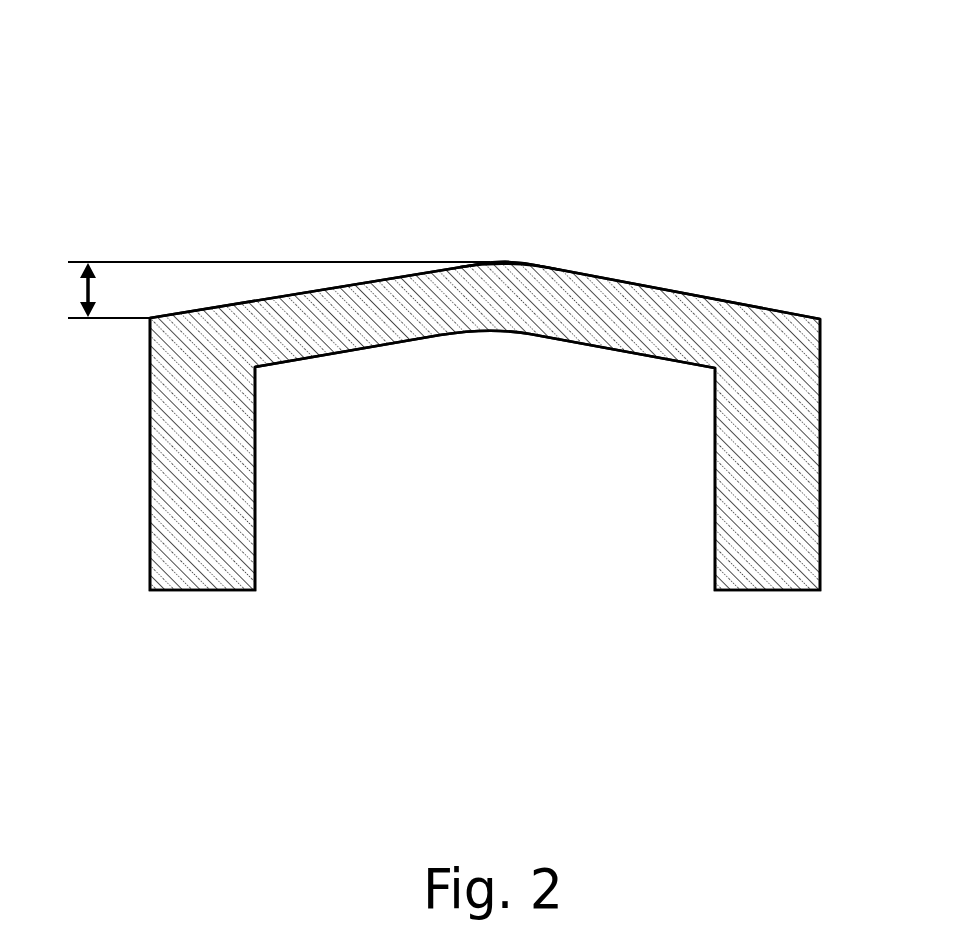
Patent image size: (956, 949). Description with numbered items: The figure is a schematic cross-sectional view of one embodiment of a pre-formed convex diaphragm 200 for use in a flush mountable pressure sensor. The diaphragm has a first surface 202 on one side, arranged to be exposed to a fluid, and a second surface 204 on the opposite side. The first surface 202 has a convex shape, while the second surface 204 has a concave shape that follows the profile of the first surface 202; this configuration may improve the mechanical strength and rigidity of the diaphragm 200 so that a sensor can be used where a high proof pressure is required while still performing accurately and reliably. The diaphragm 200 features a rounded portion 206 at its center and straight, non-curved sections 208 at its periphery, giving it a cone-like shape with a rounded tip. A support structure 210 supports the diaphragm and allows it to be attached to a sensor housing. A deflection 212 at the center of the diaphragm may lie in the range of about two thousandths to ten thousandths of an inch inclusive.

The pre-formed convex diaphragm 200 is at (430, 150).
The first surface 202 is at (597, 277).
The second surface 204 is at (335, 355).
The rounded portion 206 is at (487, 297).
The straight, non-curved sections 208 is at (652, 315).
The support structure 210 is at (220, 463).
The deflection 212 is at (256, 290).